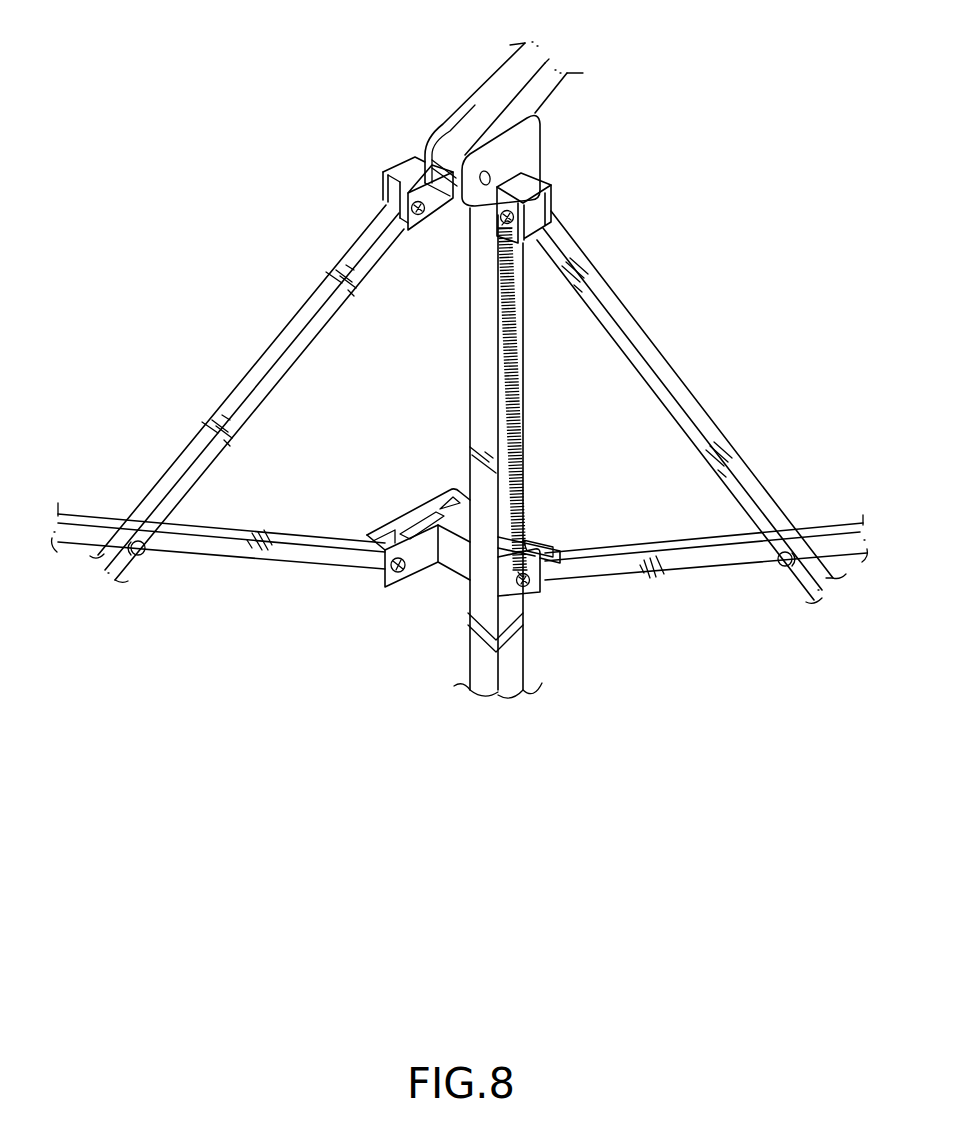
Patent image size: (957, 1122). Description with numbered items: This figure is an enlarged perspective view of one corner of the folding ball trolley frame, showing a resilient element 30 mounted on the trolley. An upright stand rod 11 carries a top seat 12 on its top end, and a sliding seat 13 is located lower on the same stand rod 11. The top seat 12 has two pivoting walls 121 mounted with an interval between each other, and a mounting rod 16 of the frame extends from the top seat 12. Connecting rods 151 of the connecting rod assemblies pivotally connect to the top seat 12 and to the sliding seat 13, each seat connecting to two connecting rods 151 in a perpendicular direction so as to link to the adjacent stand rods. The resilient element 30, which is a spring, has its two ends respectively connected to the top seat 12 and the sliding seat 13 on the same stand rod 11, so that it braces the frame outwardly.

The stand rod 11 is at (487, 373).
The top seat 12 is at (505, 176).
The pivoting wall 121 is at (528, 140).
The sliding seat 13 is at (432, 591).
The connecting rod 151 is at (683, 396).
The mounting rod 16 is at (515, 80).
The resilient element 30 is at (523, 417).